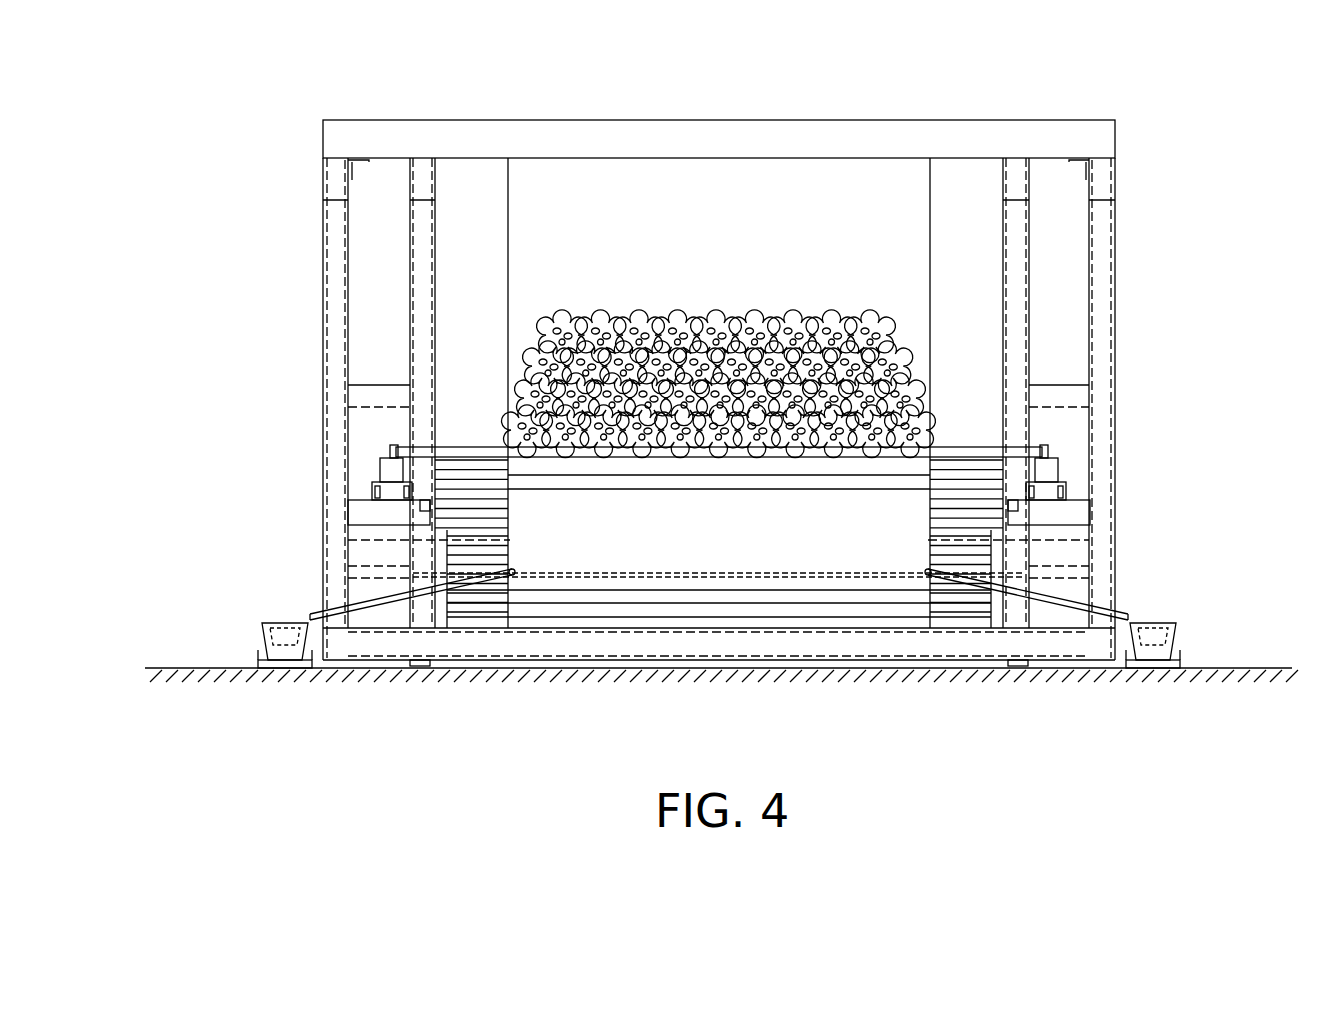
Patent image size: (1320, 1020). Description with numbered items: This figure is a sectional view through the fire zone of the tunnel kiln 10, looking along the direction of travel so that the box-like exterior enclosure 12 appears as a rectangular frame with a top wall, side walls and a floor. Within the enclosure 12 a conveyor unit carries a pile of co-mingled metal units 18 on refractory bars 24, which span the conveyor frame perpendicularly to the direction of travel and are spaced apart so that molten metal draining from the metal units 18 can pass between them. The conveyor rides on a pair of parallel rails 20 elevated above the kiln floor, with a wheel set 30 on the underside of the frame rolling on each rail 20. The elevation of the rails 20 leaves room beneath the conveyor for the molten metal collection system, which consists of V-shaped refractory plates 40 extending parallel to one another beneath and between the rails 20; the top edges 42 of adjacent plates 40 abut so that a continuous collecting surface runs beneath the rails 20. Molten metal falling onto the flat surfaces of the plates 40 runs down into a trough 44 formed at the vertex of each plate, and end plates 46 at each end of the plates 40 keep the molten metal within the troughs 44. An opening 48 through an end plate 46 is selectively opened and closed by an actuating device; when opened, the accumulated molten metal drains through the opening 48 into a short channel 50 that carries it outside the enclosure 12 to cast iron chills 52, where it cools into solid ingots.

The tunnel kiln 10 is at (219, 184).
The exterior enclosure 12 is at (1073, 120).
The co-mingled metal units 18 is at (690, 318).
The rails 20 is at (390, 474).
The refractory bars 24 is at (415, 447).
The wheel set 30 is at (385, 452).
The V-shaped refractory plates 40 is at (712, 553).
The top edges 42 is at (587, 483).
The trough 44 is at (807, 562).
The end plates 46 is at (513, 537).
The opening 48 is at (430, 660).
The channel 50 is at (360, 597).
The cast iron chills 52 is at (283, 622).